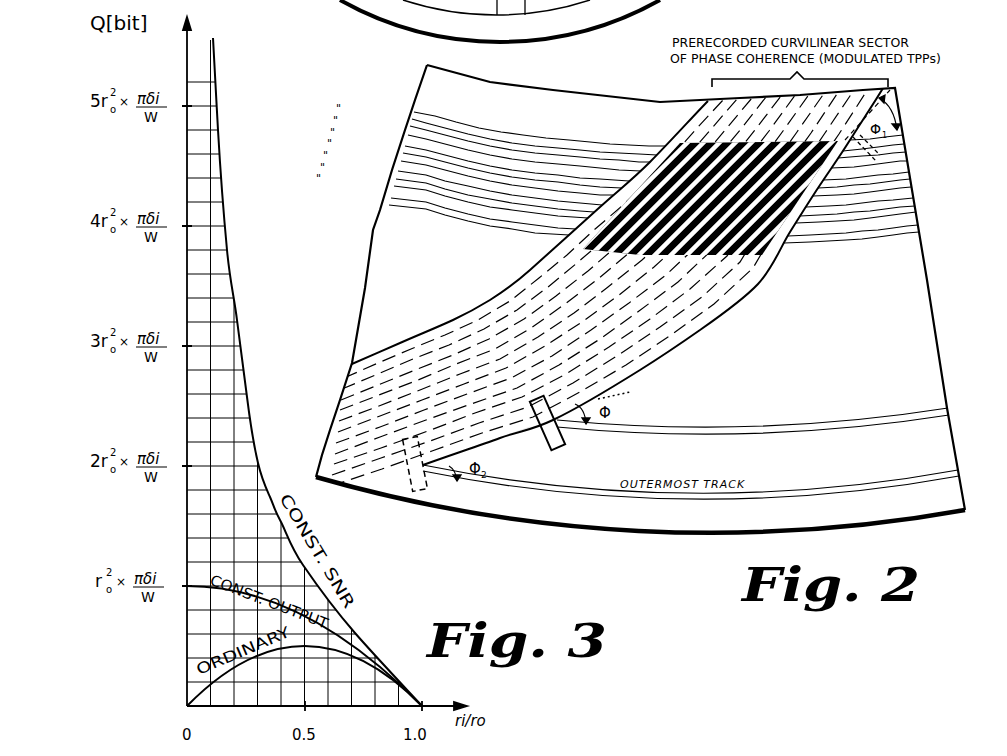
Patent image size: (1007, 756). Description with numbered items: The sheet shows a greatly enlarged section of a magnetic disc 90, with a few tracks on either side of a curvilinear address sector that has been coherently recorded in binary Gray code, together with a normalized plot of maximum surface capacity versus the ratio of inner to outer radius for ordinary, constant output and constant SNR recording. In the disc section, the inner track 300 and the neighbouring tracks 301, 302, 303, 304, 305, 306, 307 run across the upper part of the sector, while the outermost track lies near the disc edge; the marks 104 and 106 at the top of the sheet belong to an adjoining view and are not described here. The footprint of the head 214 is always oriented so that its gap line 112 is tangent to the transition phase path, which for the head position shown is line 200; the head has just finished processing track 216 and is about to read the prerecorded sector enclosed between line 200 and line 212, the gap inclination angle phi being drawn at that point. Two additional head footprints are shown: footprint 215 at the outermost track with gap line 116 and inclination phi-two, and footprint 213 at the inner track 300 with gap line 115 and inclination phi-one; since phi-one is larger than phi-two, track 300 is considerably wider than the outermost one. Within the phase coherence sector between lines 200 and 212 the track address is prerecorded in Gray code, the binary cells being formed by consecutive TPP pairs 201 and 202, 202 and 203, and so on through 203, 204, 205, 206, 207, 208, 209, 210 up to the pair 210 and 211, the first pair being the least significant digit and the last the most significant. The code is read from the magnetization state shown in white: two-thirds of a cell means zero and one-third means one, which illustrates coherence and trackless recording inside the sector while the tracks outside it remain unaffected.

The optical disc 90 is at (486, 515).
The track 104 is at (498, 15).
The track 106 is at (527, 15).
The gap line 112 is at (632, 395).
The gap line 115 is at (889, 89).
The gap line 116 is at (502, 445).
The TPP line 200 is at (653, 276).
The TPP line 201 is at (599, 287).
The TPP line 202 is at (593, 282).
The TPP line 203 is at (586, 277).
The TPP line 204 is at (580, 273).
The TPP line 205 is at (573, 268).
The TPP line 206 is at (567, 263).
The TPP line 207 is at (560, 258).
The TPP line 208 is at (553, 253).
The TPP line 209 is at (546, 249).
The TPP line 210 is at (539, 244).
The TPP line 211 is at (533, 239).
The TPP line 212 is at (484, 307).
The head footprint 213 is at (862, 126).
The head footprint 214 is at (562, 444).
The head footprint 215 is at (429, 486).
The track 216 is at (734, 430).
The inner track 300 is at (414, 112).
The track 301 is at (412, 121).
The track 302 is at (408, 135).
The track 303 is at (404, 148).
The track 304 is at (401, 161).
The track 305 is at (397, 174).
The track 306 is at (394, 186).
The track 307 is at (391, 200).